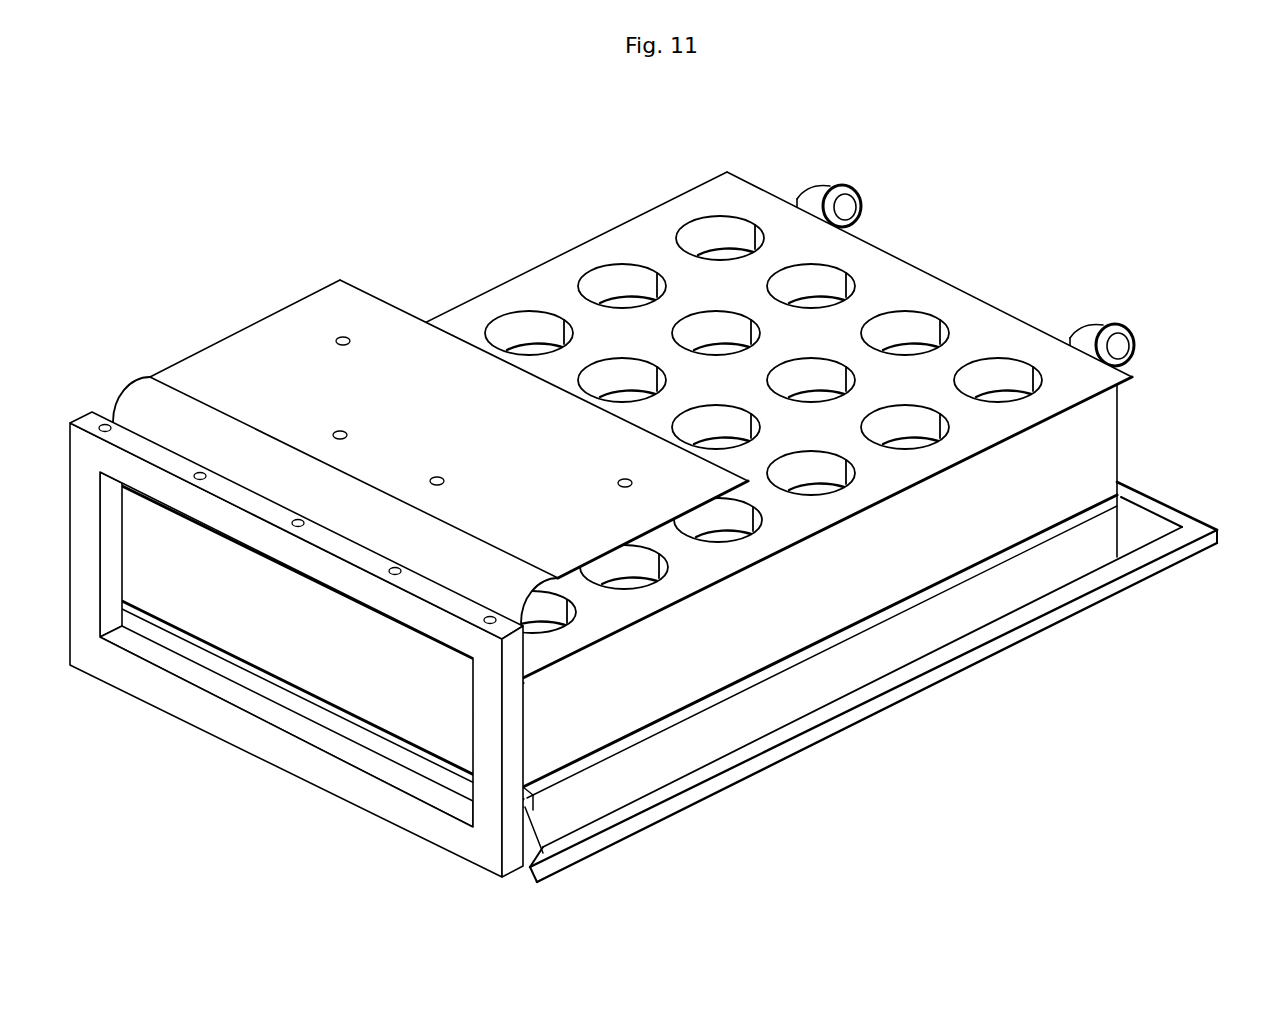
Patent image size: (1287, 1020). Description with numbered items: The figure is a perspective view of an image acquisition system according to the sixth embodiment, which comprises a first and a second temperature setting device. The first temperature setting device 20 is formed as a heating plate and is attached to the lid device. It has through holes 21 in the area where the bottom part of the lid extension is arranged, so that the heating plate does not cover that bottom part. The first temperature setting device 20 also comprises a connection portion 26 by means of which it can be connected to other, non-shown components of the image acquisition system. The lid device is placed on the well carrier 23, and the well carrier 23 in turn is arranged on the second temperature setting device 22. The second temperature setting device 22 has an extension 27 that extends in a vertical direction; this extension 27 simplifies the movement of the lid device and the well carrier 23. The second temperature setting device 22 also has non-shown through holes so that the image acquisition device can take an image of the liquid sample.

The first temperature setting device 20 is at (268, 259).
The through holes 21 is at (709, 245).
The second temperature setting device 22 is at (1135, 568).
The well carrier 23 is at (978, 608).
The connection portion 26 is at (252, 358).
The extension 27 is at (447, 832).